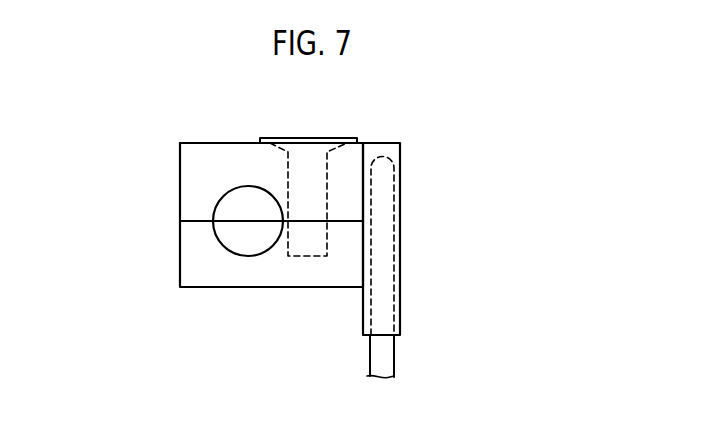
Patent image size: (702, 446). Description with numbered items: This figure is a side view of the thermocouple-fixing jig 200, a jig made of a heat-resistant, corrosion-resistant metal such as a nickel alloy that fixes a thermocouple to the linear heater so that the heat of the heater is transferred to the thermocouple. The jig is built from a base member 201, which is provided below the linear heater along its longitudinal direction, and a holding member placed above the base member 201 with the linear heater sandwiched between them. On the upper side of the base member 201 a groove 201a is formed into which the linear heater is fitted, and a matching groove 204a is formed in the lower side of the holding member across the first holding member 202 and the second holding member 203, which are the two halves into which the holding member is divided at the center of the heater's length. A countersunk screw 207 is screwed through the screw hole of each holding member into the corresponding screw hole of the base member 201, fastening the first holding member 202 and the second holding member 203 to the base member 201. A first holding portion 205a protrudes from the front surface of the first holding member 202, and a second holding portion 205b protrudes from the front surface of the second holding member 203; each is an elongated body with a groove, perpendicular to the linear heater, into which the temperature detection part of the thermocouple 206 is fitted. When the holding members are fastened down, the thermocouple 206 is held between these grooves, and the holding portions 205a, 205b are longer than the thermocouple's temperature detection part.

The thermocouple-fixing jig 200 is at (483, 121).
The base member 201 is at (180, 282).
The groove 201a is at (218, 237).
The first holding member 202 is at (215, 143).
The second holding member 203 is at (270, 120).
The groove 204a is at (218, 202).
The first holding portion 205a is at (400, 170).
The second holding portion 205b is at (449, 239).
The thermocouple 206 is at (390, 355).
The countersunk screw 207 is at (311, 137).